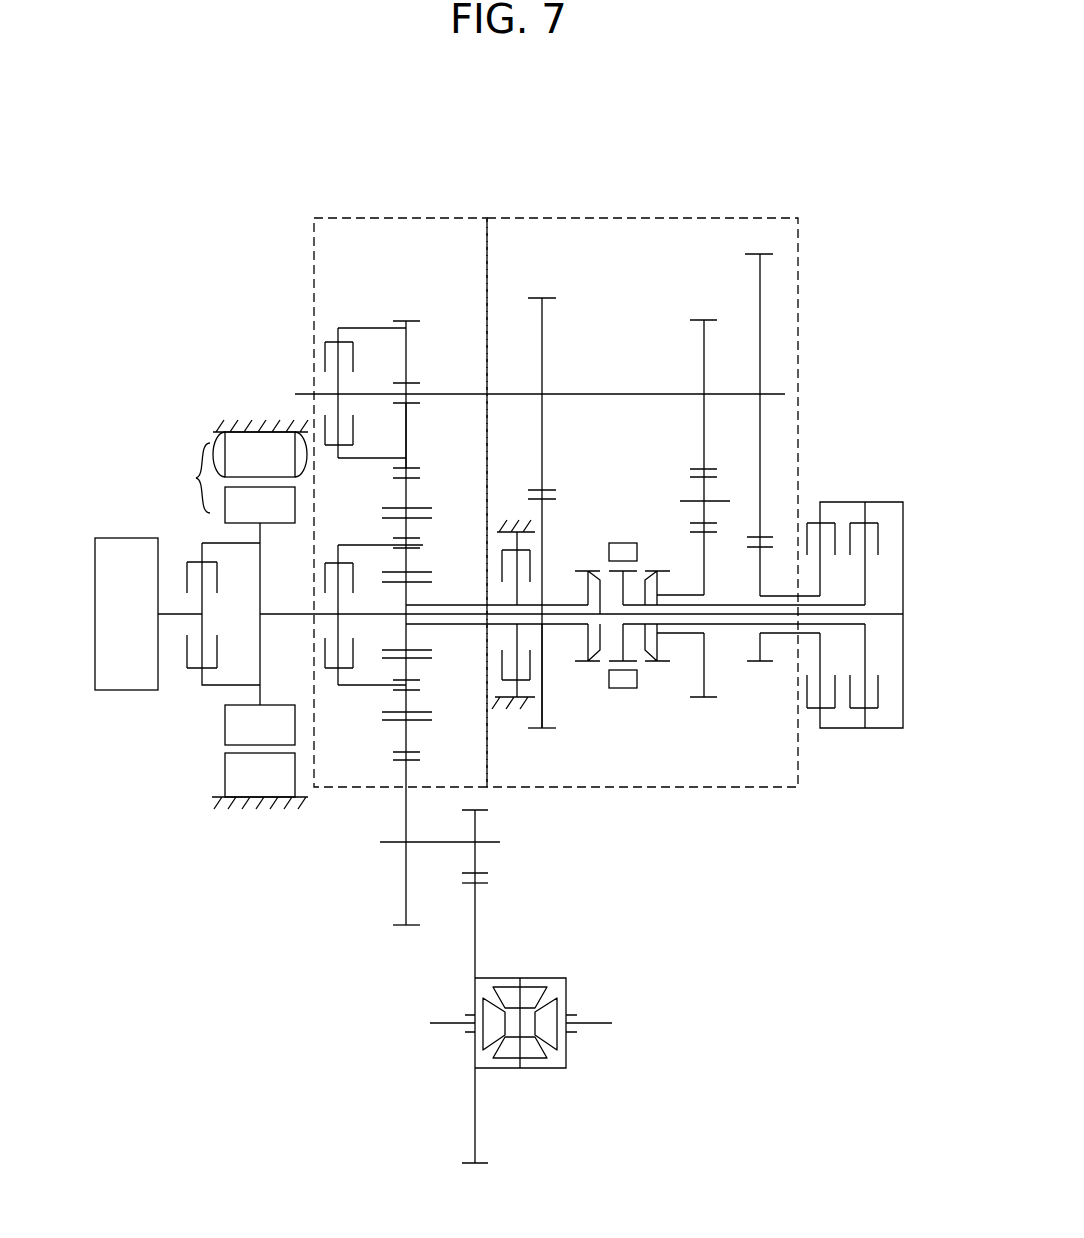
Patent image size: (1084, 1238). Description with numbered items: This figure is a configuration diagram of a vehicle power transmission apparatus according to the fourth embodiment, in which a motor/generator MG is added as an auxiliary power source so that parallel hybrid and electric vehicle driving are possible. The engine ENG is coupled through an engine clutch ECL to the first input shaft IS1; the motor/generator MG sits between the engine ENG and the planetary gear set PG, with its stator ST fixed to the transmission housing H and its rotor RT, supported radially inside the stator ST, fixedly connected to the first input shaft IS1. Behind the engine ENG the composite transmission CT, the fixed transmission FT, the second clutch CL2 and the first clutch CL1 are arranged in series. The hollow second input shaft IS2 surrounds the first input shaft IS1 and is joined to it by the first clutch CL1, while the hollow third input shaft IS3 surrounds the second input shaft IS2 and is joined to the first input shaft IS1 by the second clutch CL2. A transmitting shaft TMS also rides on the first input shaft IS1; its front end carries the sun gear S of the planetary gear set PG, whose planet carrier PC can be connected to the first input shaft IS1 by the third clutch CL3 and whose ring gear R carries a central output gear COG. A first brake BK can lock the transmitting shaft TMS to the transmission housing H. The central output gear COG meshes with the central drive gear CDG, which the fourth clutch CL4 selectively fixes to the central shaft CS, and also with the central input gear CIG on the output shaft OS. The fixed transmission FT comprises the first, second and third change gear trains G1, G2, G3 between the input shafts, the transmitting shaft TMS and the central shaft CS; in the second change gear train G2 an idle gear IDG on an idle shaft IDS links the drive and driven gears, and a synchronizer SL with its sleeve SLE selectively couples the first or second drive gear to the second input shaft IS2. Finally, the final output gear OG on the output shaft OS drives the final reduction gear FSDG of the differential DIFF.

The engine ENG is at (148, 614).
The engine clutch ECL is at (176, 548).
The motor/generator MG is at (350, 540).
The stator ST is at (260, 454).
The rotor RT is at (260, 505).
The transmission housing H is at (245, 428).
The fourth clutch CL4 is at (320, 350).
The third clutch CL3 is at (320, 570).
The second clutch CL2 is at (838, 520).
The first clutch CL1 is at (882, 520).
The central drive gear CDG is at (408, 430).
The central output gear COG is at (408, 495).
The ring gear R is at (392, 508).
The planet carrier PC is at (395, 535).
The planetary gear set PG is at (350, 538).
The sun gear S is at (404, 598).
The transmitting shaft TMS is at (459, 603).
The first input shaft IS1 is at (467, 627).
The second input shaft IS2 is at (729, 603).
The third input shaft IS3 is at (778, 594).
The first brake BK is at (490, 695).
The central shaft CS is at (613, 392).
The composite transmission CT is at (432, 212).
The fixed transmission FT is at (681, 212).
The idle gear IDG is at (690, 473).
The idle shaft IDS is at (685, 502).
The synchronizer SL is at (607, 698).
The sleeve SLE is at (623, 690).
The first change gear train G1 is at (540, 742).
The second change gear train G2 is at (700, 712).
The third change gear train G3 is at (757, 670).
The final output gear OG is at (477, 818).
The output shaft OS is at (440, 848).
The central input gear CIG is at (405, 898).
The final reduction gear FSDG is at (477, 932).
The differential DIFF is at (545, 1070).